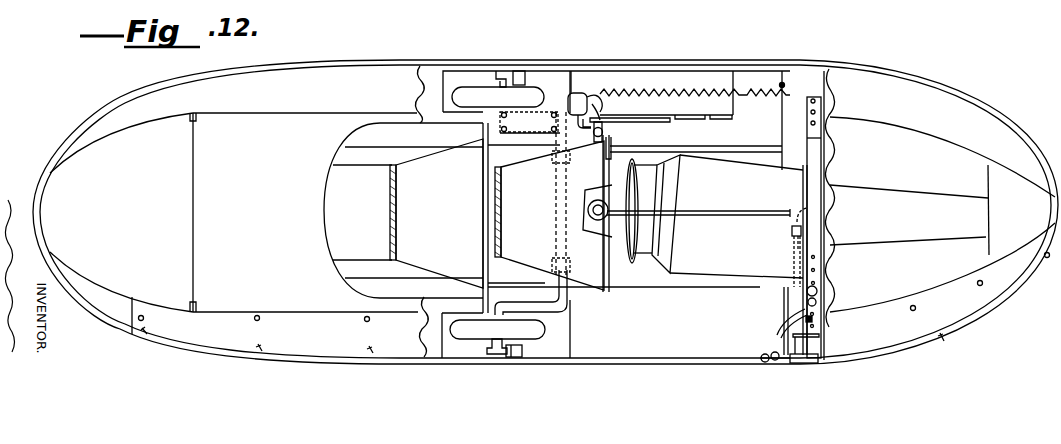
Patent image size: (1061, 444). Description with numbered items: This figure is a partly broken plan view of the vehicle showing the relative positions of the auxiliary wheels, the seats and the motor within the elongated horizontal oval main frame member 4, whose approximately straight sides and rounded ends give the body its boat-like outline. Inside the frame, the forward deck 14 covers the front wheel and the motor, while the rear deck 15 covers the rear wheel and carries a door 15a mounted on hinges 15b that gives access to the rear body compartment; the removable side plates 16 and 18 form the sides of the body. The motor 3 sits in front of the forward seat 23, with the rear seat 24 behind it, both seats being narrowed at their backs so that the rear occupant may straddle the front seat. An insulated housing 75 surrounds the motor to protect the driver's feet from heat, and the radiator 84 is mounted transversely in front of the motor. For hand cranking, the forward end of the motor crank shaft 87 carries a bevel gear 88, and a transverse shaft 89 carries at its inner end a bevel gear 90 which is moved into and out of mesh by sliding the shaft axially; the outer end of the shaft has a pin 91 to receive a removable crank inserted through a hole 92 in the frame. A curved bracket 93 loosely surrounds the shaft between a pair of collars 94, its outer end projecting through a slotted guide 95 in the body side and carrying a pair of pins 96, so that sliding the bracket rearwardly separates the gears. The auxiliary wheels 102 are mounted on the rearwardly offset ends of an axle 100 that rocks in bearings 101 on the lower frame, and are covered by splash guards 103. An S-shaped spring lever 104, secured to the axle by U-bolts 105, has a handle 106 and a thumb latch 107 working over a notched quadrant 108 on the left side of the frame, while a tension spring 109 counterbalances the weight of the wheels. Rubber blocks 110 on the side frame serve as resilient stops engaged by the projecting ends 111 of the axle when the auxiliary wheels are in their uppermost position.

The driving motor or engine 3 is at (652, 195).
The main frame member 4 is at (397, 62).
The forward deck 14 is at (942, 214).
The rear deck 15 is at (305, 212).
The door 15a is at (121, 223).
The hinges 15b is at (199, 117).
The removable side plate 16 is at (980, 297).
The removable side plate 18 is at (256, 335).
The forward seat 23 is at (635, 225).
The rear seat 24 is at (406, 218).
The insulated housing 75 is at (736, 216).
The radiator 84 is at (822, 164).
The forward end of motor crank shaft 87 is at (788, 229).
The bevel gear 88 is at (822, 210).
The transverse shaft 89 is at (798, 297).
The bevel gear 90 is at (822, 227).
The pin 91 is at (823, 334).
The hole 92 is at (798, 364).
The curved bracket 93 is at (793, 320).
The collars 94 is at (823, 308).
The slotted guide 95 is at (773, 360).
The pins 96 is at (772, 346).
The axle 100 is at (560, 185).
The bearings 101 is at (553, 160).
The auxiliary wheels 102 is at (616, 214).
The splash guards 103 is at (445, 85).
The lever 104 is at (577, 93).
The U-bolts 105 is at (488, 124).
The handle 106 is at (603, 133).
The thumb latch 107 is at (610, 148).
The notched quadrant 108 is at (703, 104).
The tension spring 109 is at (712, 83).
The rubber blocks 110 is at (518, 72).
The projecting ends of axle 111 is at (490, 72).